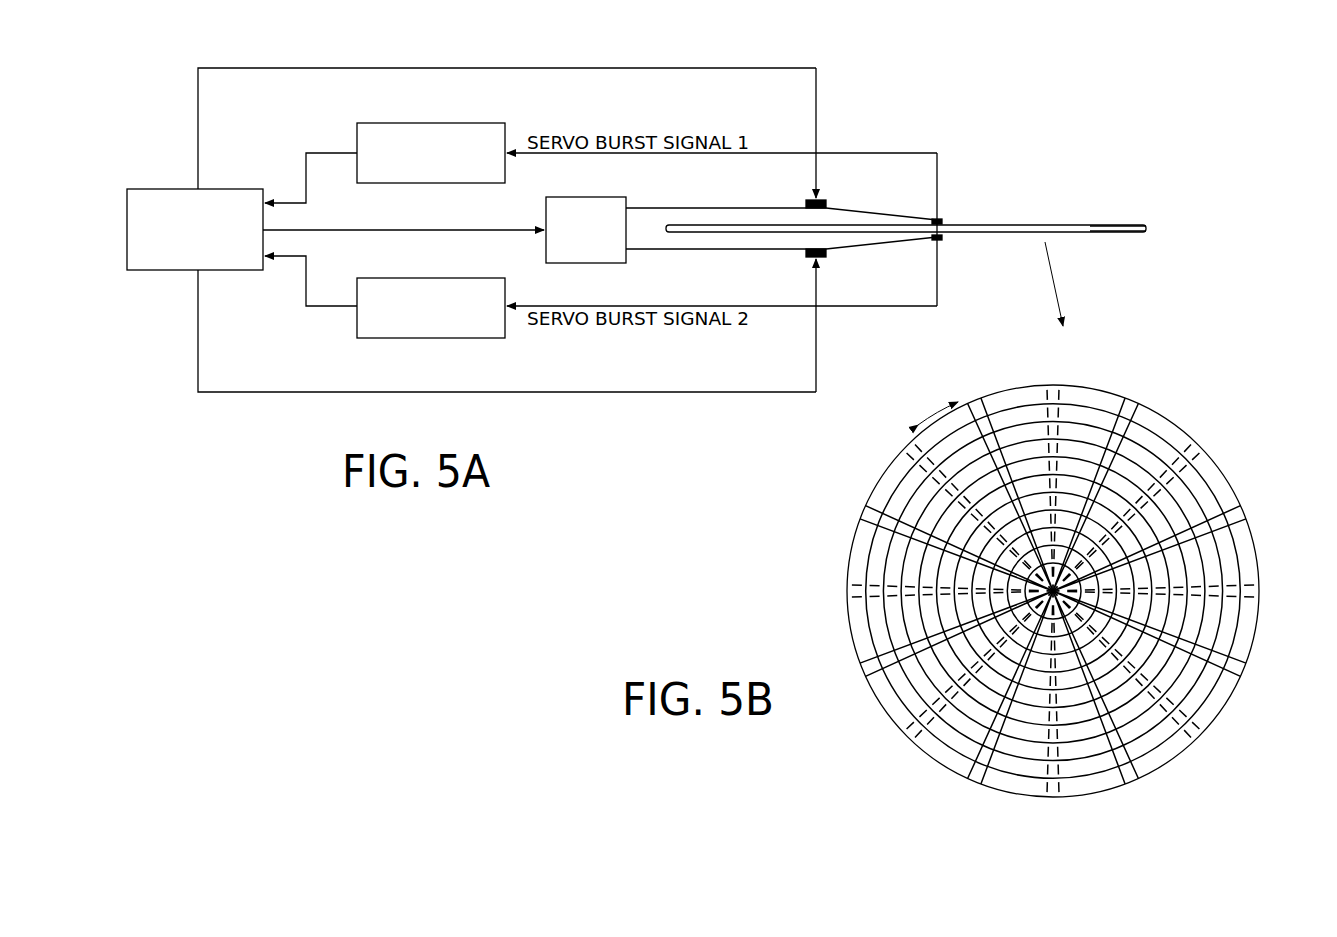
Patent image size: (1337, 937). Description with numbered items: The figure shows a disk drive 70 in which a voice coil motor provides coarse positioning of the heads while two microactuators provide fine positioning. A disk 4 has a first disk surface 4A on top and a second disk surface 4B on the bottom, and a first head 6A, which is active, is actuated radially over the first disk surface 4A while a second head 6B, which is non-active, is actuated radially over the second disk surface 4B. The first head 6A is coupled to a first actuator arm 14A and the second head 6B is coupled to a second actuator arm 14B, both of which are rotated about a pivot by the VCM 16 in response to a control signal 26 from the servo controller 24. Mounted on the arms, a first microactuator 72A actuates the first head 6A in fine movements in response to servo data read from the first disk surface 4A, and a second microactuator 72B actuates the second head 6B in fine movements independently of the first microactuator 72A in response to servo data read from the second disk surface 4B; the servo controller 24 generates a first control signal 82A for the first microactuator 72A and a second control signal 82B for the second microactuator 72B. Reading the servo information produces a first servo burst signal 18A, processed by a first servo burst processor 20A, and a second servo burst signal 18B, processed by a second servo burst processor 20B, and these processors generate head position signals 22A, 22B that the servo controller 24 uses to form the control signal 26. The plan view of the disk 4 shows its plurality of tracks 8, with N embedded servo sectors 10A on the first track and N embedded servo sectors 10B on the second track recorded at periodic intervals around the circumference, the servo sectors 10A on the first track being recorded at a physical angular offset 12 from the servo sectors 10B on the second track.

In FIG. 5A, the disk drive 70 is at (995, 79).
In FIG. 5A, the servo controller 24 is at (150, 189).
In FIG. 5A, the first control signal 82A is at (555, 68).
In FIG. 5A, the second control signal 82B is at (577, 392).
In FIG. 5A, the first servo burst processor 20A is at (430, 123).
In FIG. 5A, the second servo burst processor 20B is at (430, 338).
In FIG. 5A, the head position signal 22A is at (319, 151).
In FIG. 5A, the head position signal 22B is at (325, 307).
In FIG. 5A, the control signal 26 is at (410, 229).
In FIG. 5A, the voice coil motor (VCM) 16 is at (586, 197).
In FIG. 5A, the first actuator arm 14A is at (706, 207).
In FIG. 5A, the second actuator arm 14B is at (705, 252).
In FIG. 5A, the first microactuator 72A is at (830, 201).
In FIG. 5A, the second microactuator 72B is at (830, 258).
In FIG. 5A, the first servo burst signal 18A is at (847, 153).
In FIG. 5A, the second servo burst signal 18B is at (846, 307).
In FIG. 5A, the first head 6A is at (946, 216).
In FIG. 5A, the second head 6B is at (946, 243).
In FIG. 5A, the disk 4 is at (1148, 229).
In FIG. 5B, the disk 4 is at (1177, 412).
In FIG. 5A, the first disk surface 4A is at (1111, 222).
In FIG. 5A, the second disk surface 4B is at (1111, 236).
In FIG. 5B, the tracks 8 is at (1085, 400).
In FIG. 5B, the embedded servo sectors 10A is at (973, 400).
In FIG. 5B, the embedded servo sectors 10B is at (1056, 383).
In FIG. 5B, the physical angular offset 12 is at (924, 415).